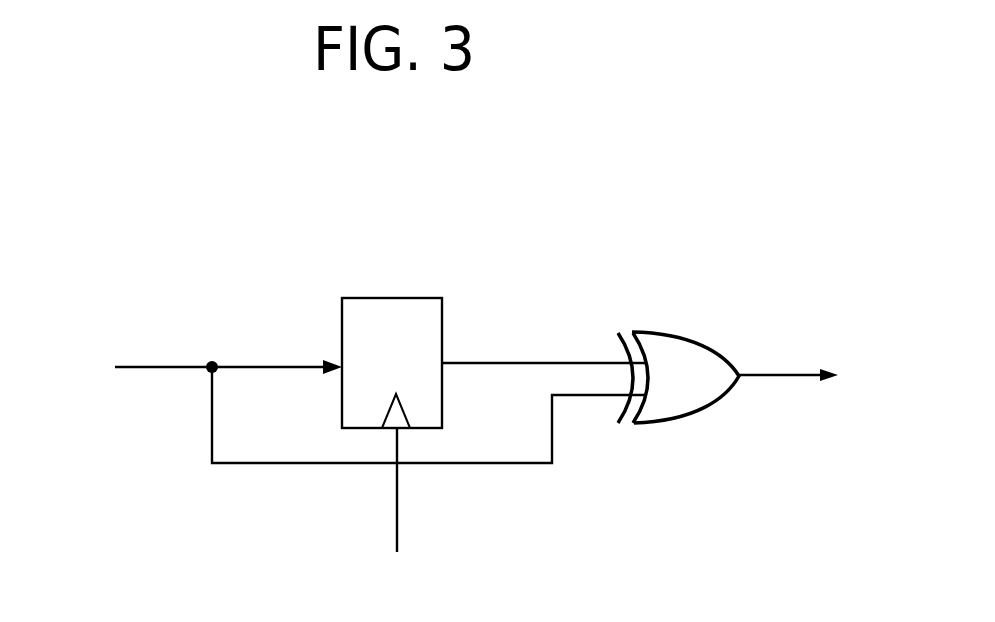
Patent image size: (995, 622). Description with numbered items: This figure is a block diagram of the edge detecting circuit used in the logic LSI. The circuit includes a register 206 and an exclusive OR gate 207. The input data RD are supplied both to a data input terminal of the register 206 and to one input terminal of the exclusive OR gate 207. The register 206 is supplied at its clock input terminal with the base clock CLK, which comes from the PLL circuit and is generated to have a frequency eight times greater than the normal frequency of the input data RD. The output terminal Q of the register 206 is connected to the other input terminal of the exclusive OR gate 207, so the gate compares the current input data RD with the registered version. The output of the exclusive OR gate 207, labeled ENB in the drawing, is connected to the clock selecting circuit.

The register 206 is at (400, 298).
The exclusive OR gate 207 is at (683, 333).
The input data RD is at (343, 406).
The base clock CLK is at (396, 508).
The enable output signal line ENB is at (827, 377).